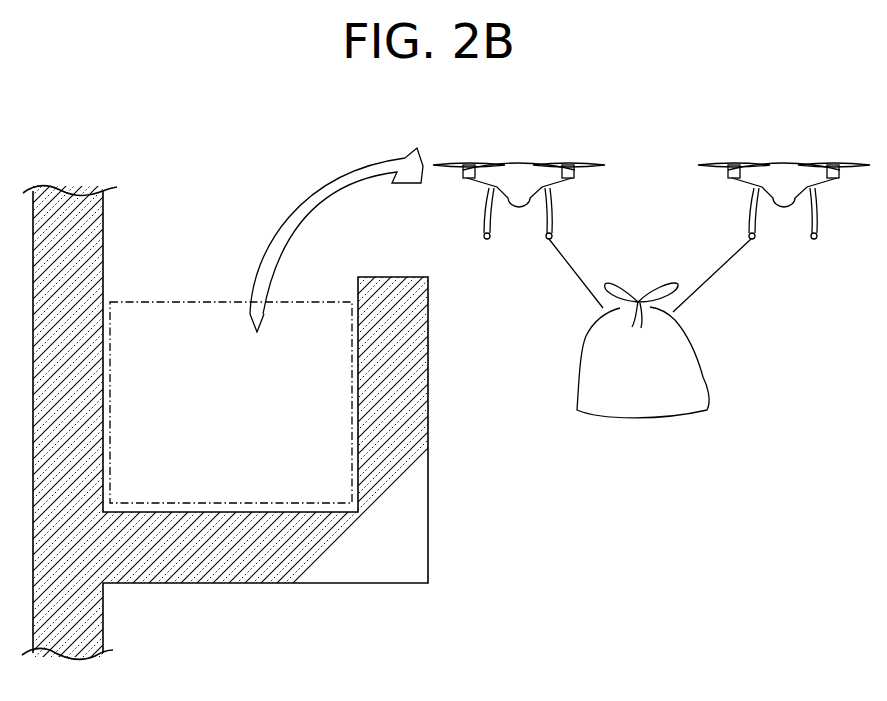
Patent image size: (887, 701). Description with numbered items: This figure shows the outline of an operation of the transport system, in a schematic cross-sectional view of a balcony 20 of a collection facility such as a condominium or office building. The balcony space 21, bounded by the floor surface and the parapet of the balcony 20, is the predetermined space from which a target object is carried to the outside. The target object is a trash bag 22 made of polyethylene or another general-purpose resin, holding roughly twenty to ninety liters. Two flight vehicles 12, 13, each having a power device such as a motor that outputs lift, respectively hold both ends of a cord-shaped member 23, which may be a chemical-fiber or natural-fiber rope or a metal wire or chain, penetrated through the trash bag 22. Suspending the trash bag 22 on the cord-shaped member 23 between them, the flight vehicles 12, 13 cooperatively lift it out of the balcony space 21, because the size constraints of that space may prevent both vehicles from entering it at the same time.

The flight vehicle 12 is at (539, 146).
The flight vehicle 13 is at (802, 146).
The balcony 20 is at (410, 523).
The balcony space 21 is at (193, 302).
The trash bag 22 is at (703, 363).
The cord-shaped member 23 is at (721, 268).